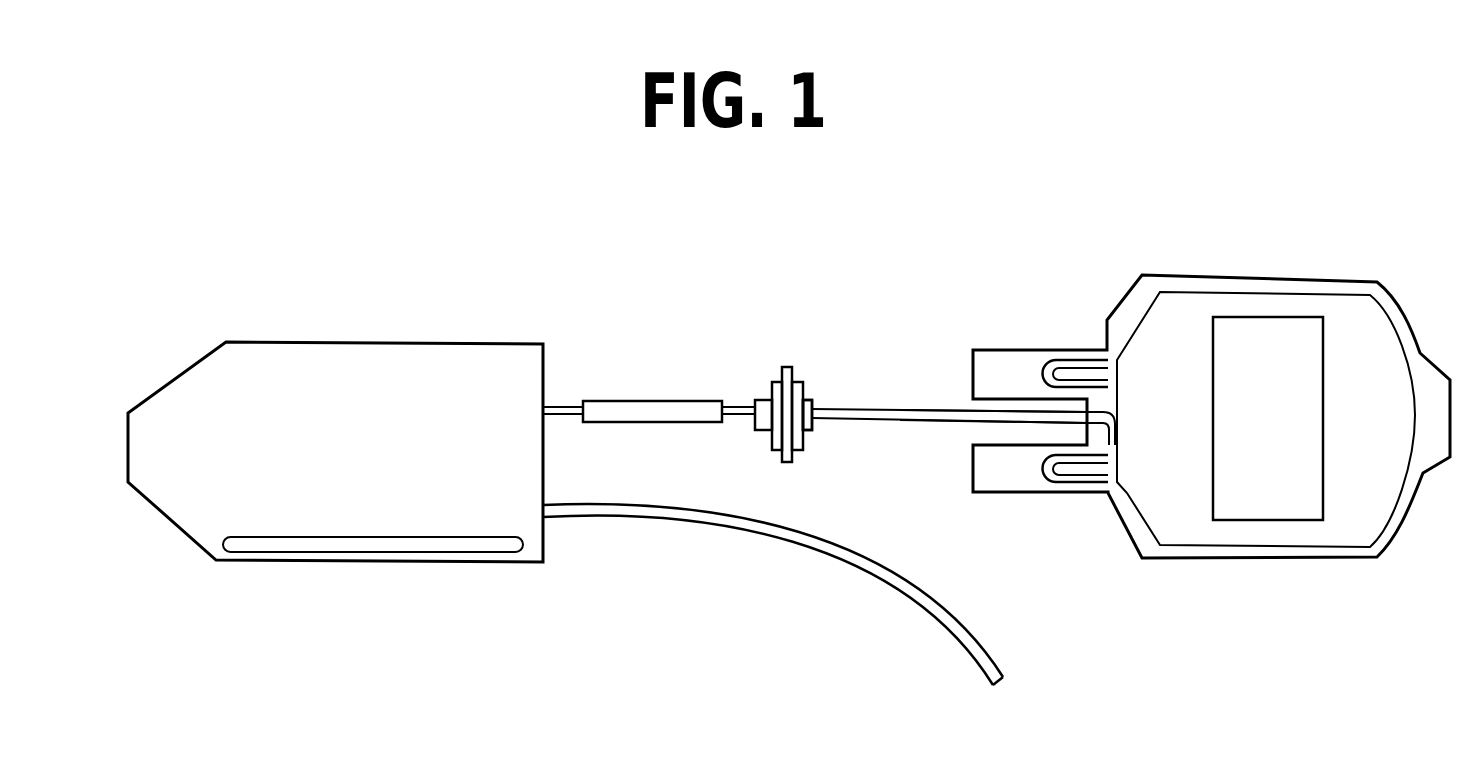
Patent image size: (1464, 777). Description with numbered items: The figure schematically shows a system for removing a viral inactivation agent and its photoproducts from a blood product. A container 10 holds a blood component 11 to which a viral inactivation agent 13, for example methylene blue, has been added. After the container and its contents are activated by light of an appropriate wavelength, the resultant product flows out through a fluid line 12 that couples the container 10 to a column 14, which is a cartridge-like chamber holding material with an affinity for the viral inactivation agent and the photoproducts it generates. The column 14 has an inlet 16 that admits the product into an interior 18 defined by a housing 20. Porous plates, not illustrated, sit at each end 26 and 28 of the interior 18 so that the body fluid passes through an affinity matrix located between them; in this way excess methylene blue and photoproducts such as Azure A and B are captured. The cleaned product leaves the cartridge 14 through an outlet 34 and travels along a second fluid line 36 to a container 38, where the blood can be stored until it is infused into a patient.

The container 10 is at (335, 494).
The blood component 11 is at (408, 498).
The fluid line 12 is at (562, 405).
The viral inactivation agent 13 is at (325, 548).
The column 14 is at (794, 394).
The inlet 16 is at (767, 430).
The interior 18 is at (807, 437).
The housing 20 is at (813, 402).
The end 26 is at (773, 385).
The end 28 is at (813, 423).
The outlet 34 is at (813, 413).
The fluid line 36 is at (932, 421).
The container 38 is at (1289, 570).